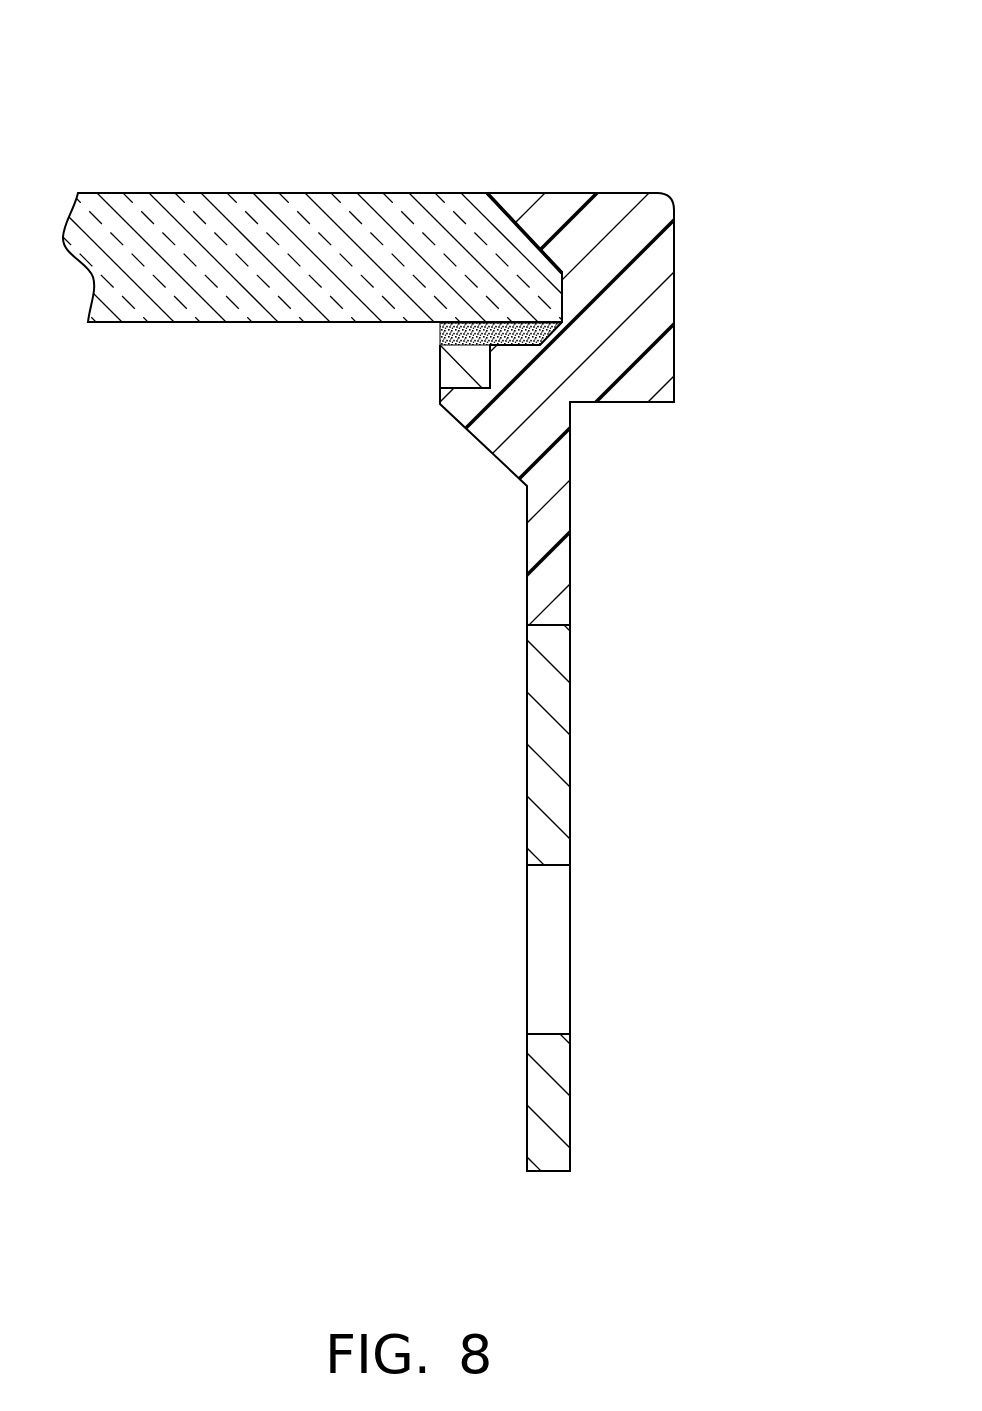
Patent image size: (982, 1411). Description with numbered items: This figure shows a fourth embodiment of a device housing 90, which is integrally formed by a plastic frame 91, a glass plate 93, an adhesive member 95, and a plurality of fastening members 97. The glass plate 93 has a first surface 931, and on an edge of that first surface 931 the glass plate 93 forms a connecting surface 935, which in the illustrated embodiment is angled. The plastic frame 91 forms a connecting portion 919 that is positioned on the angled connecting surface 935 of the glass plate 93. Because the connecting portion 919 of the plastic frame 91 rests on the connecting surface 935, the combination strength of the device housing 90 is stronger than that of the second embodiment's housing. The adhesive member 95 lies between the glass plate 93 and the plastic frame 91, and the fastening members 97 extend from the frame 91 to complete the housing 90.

The device housing 90 is at (420, 60).
The plastic frame 91 is at (630, 288).
The glass plate 93 is at (220, 225).
The first surface 931 is at (320, 193).
The connecting surface 935 is at (508, 213).
The connecting portion 919 is at (537, 225).
The adhesive layer 95 is at (440, 333).
The fastening members 97 is at (545, 792).